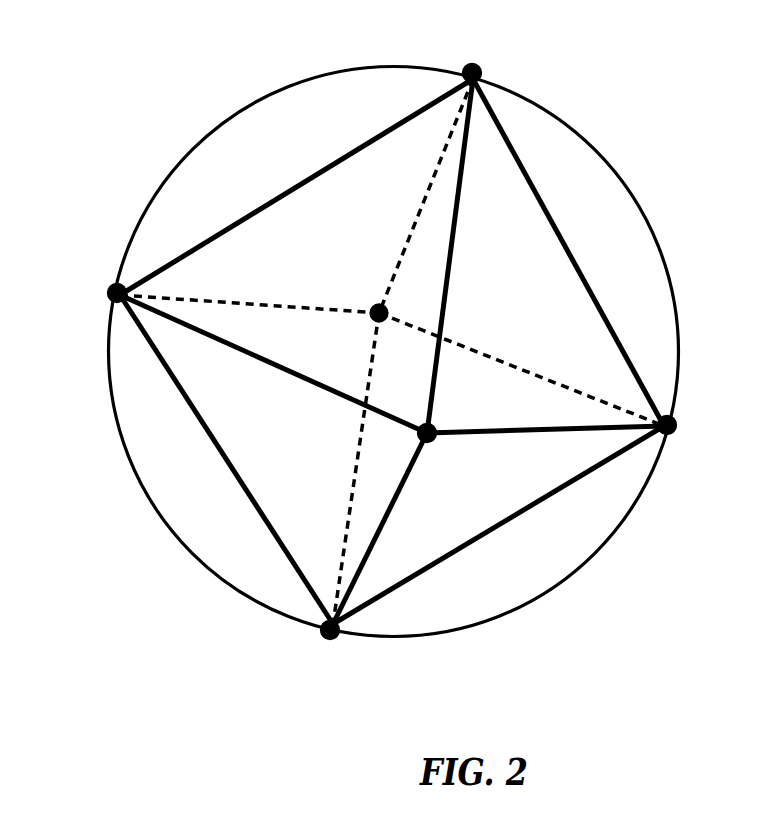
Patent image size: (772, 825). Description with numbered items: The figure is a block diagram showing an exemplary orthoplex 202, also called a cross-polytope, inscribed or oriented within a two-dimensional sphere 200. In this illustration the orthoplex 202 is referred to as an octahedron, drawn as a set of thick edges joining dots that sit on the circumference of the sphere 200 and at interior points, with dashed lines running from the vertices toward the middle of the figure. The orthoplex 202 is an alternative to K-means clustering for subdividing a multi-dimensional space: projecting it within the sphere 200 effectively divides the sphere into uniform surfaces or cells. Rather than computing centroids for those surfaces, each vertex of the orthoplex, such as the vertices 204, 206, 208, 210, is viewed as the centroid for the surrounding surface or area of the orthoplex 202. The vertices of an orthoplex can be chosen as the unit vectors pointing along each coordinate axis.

The sphere 200 is at (633, 198).
The orthoplex 202 is at (512, 141).
The vertex 204 is at (107, 302).
The vertex 206 is at (321, 644).
The vertex 208 is at (679, 431).
The vertex 210 is at (437, 445).